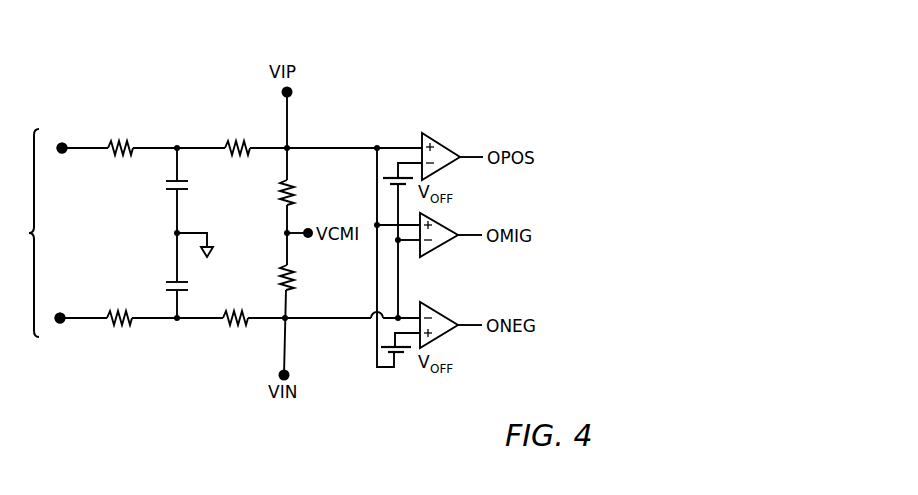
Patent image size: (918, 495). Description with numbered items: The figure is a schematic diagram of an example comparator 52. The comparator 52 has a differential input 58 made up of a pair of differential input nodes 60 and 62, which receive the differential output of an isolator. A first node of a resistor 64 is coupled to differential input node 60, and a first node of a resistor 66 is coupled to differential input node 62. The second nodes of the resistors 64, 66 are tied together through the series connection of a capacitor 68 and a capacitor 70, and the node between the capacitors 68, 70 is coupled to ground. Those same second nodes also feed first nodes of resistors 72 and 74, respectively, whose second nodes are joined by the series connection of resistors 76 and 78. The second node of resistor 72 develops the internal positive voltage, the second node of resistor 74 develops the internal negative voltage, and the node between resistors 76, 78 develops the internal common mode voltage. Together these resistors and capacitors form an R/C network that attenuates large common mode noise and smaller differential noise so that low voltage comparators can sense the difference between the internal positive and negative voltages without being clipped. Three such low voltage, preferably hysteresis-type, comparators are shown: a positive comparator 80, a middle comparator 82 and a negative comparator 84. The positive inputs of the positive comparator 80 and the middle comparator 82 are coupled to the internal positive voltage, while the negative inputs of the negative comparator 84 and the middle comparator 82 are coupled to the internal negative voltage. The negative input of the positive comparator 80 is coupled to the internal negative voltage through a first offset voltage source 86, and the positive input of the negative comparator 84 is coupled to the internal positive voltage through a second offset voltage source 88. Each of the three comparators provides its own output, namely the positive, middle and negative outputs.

The comparator 52 is at (428, 73).
The differential input 58 is at (20, 233).
The differential input node 60 is at (62, 143).
The differential input node 62 is at (62, 328).
The resistor 64 is at (117, 143).
The resistor 66 is at (115, 328).
The capacitor 68 is at (164, 184).
The capacitor 70 is at (164, 285).
The resistor 72 is at (230, 142).
The resistor 74 is at (225, 330).
The resistor 76 is at (277, 197).
The resistor 78 is at (277, 279).
The positive comparator 80 is at (445, 154).
The middle comparator 82 is at (443, 232).
The negative comparator 84 is at (443, 322).
The first offset voltage source 86 is at (380, 184).
The second offset voltage source 88 is at (380, 357).